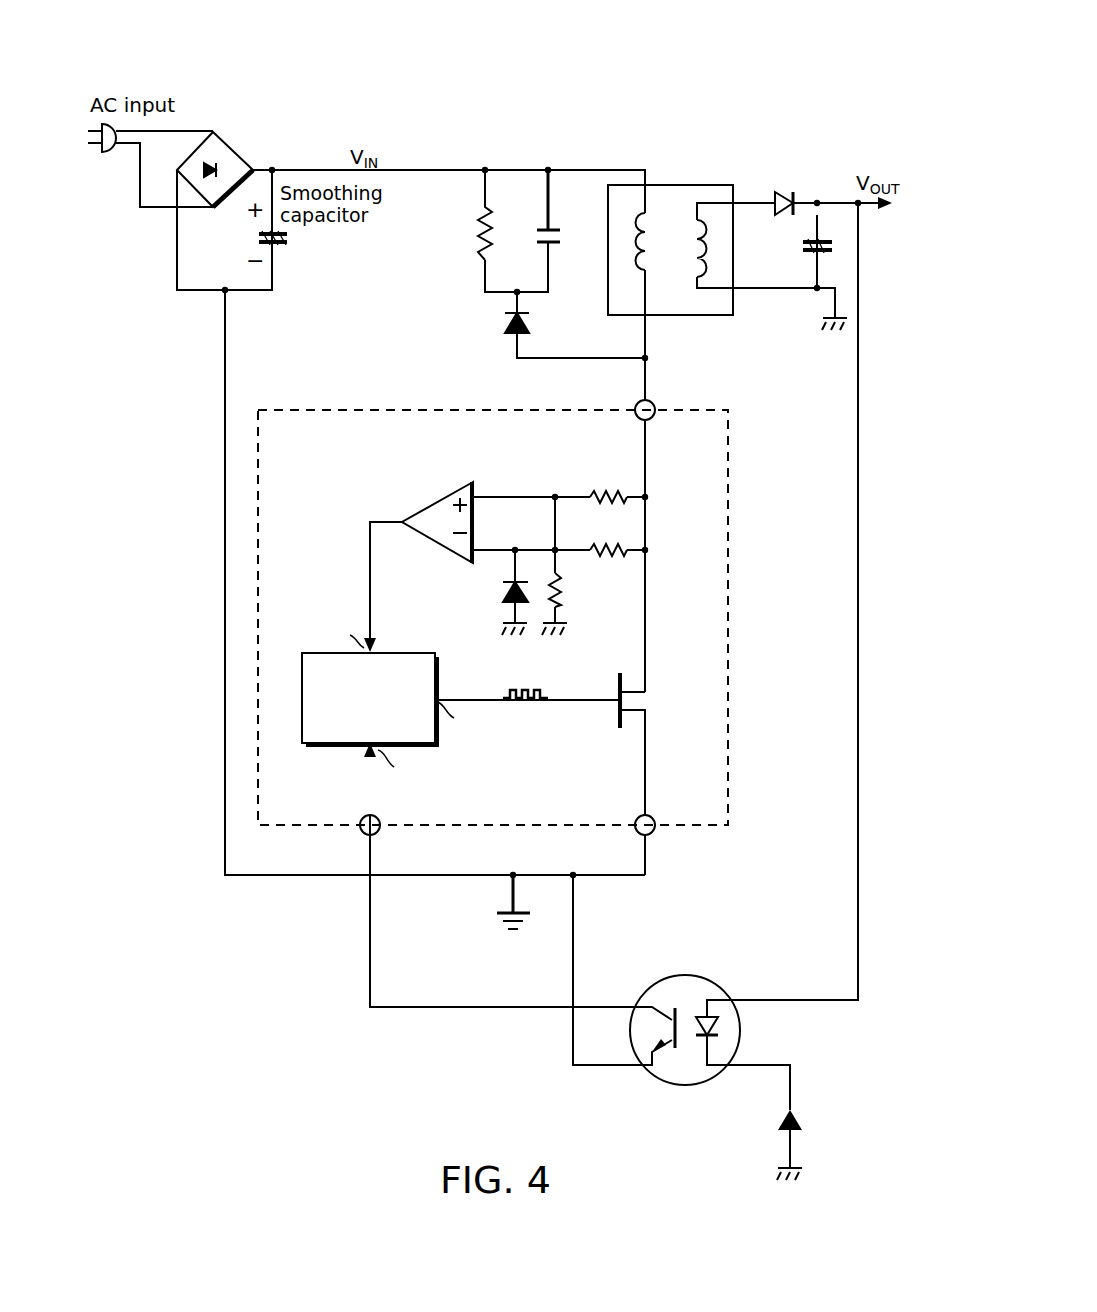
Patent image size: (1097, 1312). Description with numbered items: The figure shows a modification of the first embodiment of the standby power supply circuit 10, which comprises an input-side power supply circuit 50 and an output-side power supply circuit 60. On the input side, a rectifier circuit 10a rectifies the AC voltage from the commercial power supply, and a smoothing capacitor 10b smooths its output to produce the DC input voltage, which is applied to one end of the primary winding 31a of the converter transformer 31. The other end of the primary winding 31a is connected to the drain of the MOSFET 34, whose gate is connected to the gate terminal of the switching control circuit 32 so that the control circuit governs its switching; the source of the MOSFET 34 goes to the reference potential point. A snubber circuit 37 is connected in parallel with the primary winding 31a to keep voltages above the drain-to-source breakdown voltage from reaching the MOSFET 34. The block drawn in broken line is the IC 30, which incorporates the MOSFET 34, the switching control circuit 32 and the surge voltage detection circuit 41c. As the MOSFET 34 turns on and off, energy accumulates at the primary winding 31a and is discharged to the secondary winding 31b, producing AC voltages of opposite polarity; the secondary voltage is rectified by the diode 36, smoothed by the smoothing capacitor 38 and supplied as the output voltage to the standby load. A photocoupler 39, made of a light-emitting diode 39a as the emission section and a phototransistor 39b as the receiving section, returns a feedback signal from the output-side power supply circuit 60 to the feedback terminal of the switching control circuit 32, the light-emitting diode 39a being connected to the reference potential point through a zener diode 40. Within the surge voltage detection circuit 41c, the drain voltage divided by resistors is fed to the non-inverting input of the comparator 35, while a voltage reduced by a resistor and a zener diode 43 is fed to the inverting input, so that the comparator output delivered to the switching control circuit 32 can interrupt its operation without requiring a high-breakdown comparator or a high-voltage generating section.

The standby power supply circuit 10 is at (456, 90).
The rectifier circuit 10a is at (222, 137).
The smoothing capacitor 10b is at (290, 243).
The snubber circuit 37 is at (500, 195).
The input-side power supply circuit 50 is at (630, 130).
The converter transformer 31 is at (668, 205).
The primary winding 31a is at (643, 266).
The secondary winding 31b is at (688, 275).
The diode 36 is at (796, 200).
The smoothing capacitor 38 is at (803, 247).
The output-side power supply circuit 60 is at (812, 95).
The IC 30 is at (730, 706).
The surge voltage detection circuit 41c is at (494, 458).
The comparator 35 is at (476, 522).
The reference voltage zener diode 43 is at (497, 595).
The switching control circuit 32 is at (300, 725).
The MOSFET 34 is at (638, 718).
The photocoupler 39 is at (712, 980).
The light-emitting diode 39a is at (726, 1025).
The phototransistor 39b is at (648, 1025).
The zener diode 40 is at (770, 1122).